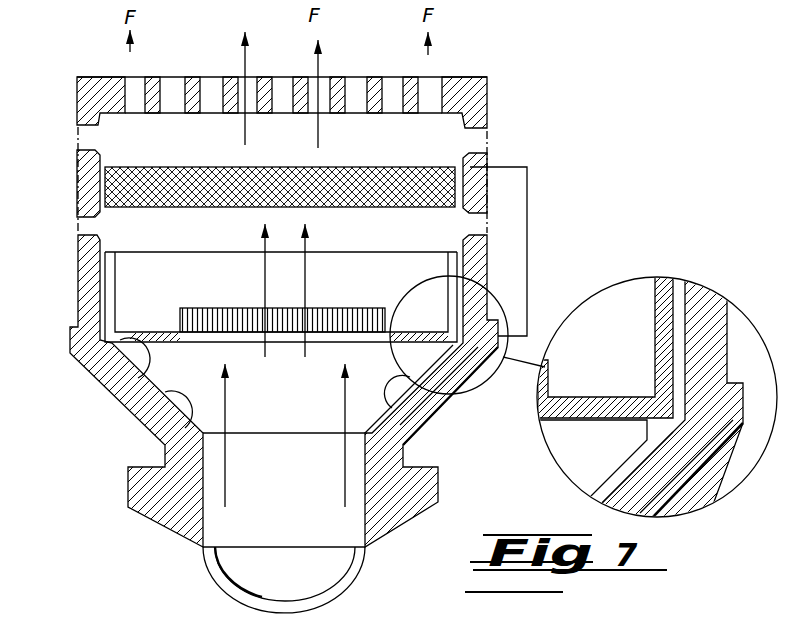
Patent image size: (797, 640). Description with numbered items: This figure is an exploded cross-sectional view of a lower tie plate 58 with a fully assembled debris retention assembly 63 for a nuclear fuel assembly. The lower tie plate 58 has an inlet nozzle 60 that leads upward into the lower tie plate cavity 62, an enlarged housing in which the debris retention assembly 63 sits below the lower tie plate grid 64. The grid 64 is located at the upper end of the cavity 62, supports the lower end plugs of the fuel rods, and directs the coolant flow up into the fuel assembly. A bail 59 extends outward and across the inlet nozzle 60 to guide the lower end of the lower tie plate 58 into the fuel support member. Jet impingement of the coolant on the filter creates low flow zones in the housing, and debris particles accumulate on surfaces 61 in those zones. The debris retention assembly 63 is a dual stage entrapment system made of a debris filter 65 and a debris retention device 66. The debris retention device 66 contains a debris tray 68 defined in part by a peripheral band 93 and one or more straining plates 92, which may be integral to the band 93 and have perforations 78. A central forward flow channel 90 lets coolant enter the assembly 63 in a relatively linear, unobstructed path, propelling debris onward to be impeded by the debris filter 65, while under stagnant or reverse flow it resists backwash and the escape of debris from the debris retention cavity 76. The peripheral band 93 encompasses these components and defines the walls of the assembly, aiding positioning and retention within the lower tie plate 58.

The lower tie plate 58 is at (562, 121).
The bail 59 is at (218, 594).
The inlet nozzle 60 is at (288, 553).
The surfaces 61 is at (150, 437).
The lower tie plate cavity 62 is at (298, 408).
The debris retention assembly 63 is at (527, 255).
The lower tie plate grid 64 is at (460, 77).
The debris filter 65 is at (138, 167).
The debris retention device 66 is at (152, 272).
The debris tray 68 is at (33, 342).
The debris retention cavity 76 is at (632, 318).
The perforations 78 is at (562, 397).
The forward flow channel 90 is at (347, 320).
The straining plates 92 is at (110, 390).
The peripheral band 93 is at (100, 298).